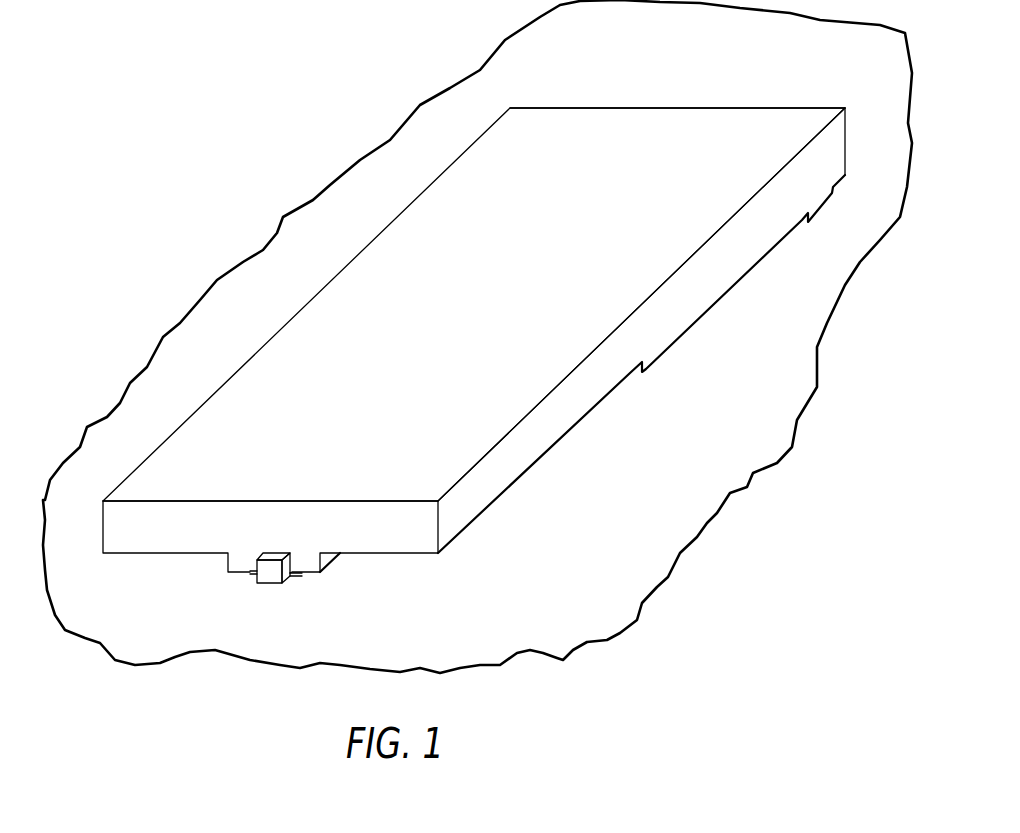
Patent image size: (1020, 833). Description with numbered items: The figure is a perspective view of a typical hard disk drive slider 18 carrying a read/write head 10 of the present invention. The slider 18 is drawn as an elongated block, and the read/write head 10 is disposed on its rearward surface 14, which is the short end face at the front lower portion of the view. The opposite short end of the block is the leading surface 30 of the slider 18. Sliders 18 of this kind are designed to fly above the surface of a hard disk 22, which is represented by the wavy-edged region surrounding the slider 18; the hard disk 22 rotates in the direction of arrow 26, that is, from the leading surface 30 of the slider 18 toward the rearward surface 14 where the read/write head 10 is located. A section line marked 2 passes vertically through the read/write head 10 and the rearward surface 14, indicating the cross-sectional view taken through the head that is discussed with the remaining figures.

The section line 2- 2 is at (273, 553).
The read/write head 10 is at (268, 575).
The rearward surface 14 is at (388, 548).
The slider 18 is at (365, 278).
The hard disk 22 is at (689, 421).
The arrow 26 is at (748, 40).
The leading surface 30 is at (773, 108).